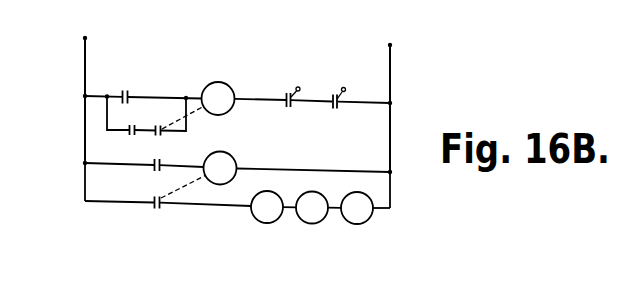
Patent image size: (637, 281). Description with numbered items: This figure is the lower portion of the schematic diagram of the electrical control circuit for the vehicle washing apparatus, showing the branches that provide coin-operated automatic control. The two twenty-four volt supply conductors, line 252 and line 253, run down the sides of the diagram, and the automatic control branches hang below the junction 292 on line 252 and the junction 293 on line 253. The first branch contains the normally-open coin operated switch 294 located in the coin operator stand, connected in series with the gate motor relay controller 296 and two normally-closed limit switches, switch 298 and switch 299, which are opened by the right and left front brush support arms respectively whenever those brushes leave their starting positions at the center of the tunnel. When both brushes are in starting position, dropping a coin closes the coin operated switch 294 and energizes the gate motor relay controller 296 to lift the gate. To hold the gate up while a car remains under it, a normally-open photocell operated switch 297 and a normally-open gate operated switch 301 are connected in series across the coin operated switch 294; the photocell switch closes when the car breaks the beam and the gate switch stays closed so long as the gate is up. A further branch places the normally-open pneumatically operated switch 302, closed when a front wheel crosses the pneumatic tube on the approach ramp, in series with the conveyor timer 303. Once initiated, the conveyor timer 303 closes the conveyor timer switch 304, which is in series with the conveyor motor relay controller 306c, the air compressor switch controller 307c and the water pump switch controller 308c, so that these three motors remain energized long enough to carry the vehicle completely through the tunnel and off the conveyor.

The junction 292 is at (85, 38).
The line 252 is at (83, 65).
The junction 293 is at (390, 45).
The line 253 is at (390, 76).
The coin operated switch 294 is at (127, 88).
The gate motor relay controller 296 is at (218, 81).
The limit switch 298 is at (289, 85).
The limit switch 299 is at (338, 86).
The photocell operated switch 297 is at (130, 138).
The gate operated switch 301 is at (160, 138).
The conveyor timer 303 is at (223, 152).
The pneumatically operated switch 302 is at (155, 176).
The conveyor timer switch 304 is at (153, 218).
The conveyor motor relay controller 306c is at (257, 221).
The air compressor switch controller 307c is at (310, 224).
The water pump switch controller 308c is at (356, 225).